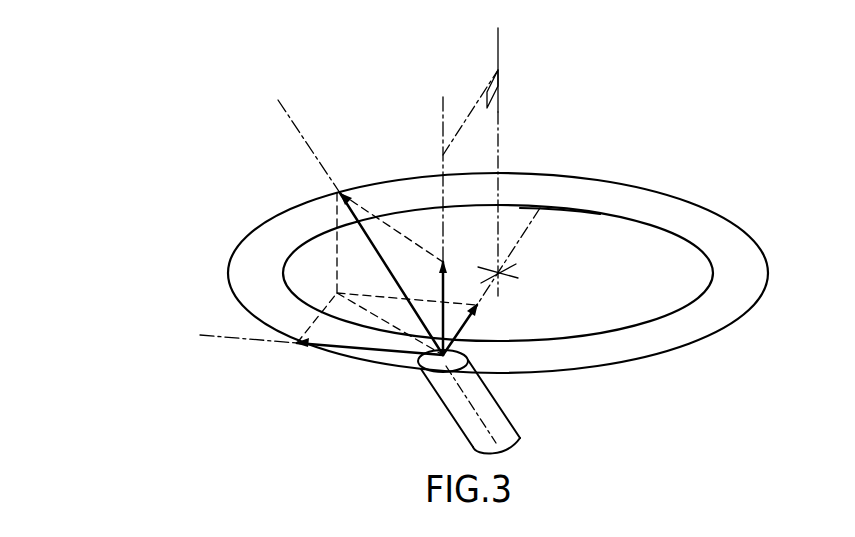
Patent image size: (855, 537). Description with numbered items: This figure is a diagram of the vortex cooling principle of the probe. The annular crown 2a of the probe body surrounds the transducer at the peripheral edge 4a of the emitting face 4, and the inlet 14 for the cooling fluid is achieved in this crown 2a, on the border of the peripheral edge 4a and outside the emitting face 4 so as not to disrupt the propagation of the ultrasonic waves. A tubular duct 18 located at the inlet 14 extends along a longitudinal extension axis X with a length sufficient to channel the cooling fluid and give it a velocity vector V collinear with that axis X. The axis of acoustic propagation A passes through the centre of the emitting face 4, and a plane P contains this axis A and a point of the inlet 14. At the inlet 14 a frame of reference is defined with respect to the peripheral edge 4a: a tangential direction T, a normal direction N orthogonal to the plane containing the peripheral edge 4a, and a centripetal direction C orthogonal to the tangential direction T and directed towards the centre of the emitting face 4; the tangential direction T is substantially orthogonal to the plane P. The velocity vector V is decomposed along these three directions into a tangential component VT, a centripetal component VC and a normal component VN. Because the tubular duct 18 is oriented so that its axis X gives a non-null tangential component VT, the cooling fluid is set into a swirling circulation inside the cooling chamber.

The crown 2a is at (667, 207).
The emitting face 4 is at (561, 224).
The peripheral edge of the emitting face 4a is at (697, 278).
The inlet 14 is at (421, 370).
The tubular duct 18 is at (458, 414).
The axis of acoustic propagation A is at (498, 153).
The longitudinal extension axis X is at (288, 110).
The normal direction N is at (443, 121).
The plane P is at (503, 89).
The centripetal direction C is at (521, 236).
The tangential direction T is at (213, 337).
The velocity vector V is at (380, 258).
The normal component VN is at (441, 289).
The centripetal component VC is at (465, 329).
The tangential component VT is at (382, 357).